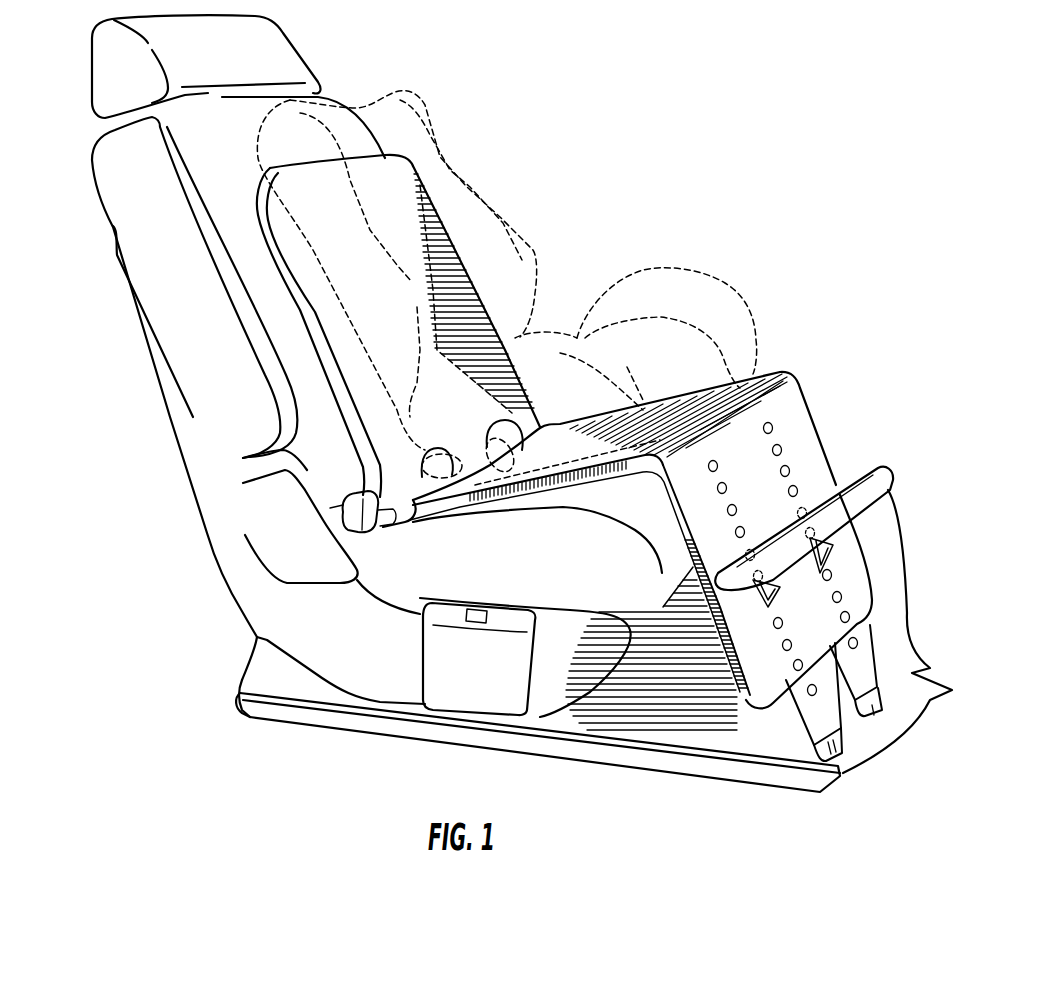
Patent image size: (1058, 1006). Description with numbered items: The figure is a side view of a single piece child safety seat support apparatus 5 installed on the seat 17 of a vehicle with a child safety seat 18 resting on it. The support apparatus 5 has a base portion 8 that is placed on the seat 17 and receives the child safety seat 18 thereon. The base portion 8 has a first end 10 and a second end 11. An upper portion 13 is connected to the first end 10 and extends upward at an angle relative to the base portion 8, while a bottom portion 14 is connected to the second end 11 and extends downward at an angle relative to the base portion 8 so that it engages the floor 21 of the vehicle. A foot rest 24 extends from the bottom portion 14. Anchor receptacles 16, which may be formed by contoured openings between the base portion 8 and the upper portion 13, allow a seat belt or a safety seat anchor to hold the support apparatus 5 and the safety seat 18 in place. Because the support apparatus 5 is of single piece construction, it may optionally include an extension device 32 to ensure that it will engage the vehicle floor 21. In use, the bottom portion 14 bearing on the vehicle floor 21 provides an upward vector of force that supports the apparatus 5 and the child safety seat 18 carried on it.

The single piece child safety seat support apparatus 5 is at (793, 337).
The base portion 8 is at (553, 453).
The first end 10 is at (418, 486).
The second end 11 is at (730, 416).
The upper portion 13 is at (343, 348).
The bottom portion 14 is at (742, 610).
The anchor receptacles 16 is at (488, 484).
The seat 17 is at (152, 202).
The child safety seat 18 is at (653, 340).
The floor 21 is at (763, 733).
The foot rest 24 is at (840, 483).
The extension device 32 is at (872, 675).